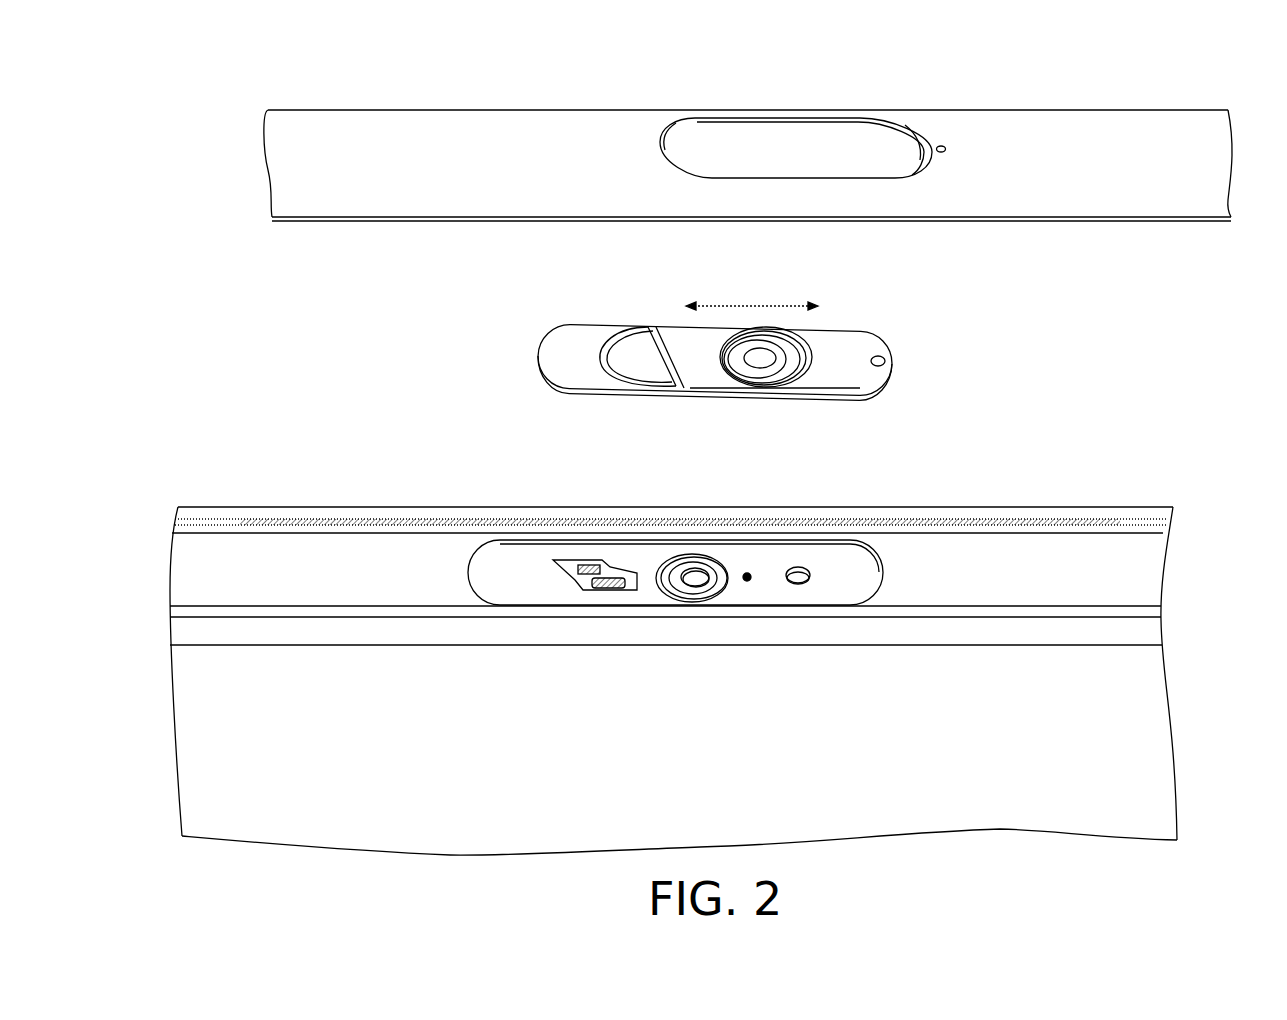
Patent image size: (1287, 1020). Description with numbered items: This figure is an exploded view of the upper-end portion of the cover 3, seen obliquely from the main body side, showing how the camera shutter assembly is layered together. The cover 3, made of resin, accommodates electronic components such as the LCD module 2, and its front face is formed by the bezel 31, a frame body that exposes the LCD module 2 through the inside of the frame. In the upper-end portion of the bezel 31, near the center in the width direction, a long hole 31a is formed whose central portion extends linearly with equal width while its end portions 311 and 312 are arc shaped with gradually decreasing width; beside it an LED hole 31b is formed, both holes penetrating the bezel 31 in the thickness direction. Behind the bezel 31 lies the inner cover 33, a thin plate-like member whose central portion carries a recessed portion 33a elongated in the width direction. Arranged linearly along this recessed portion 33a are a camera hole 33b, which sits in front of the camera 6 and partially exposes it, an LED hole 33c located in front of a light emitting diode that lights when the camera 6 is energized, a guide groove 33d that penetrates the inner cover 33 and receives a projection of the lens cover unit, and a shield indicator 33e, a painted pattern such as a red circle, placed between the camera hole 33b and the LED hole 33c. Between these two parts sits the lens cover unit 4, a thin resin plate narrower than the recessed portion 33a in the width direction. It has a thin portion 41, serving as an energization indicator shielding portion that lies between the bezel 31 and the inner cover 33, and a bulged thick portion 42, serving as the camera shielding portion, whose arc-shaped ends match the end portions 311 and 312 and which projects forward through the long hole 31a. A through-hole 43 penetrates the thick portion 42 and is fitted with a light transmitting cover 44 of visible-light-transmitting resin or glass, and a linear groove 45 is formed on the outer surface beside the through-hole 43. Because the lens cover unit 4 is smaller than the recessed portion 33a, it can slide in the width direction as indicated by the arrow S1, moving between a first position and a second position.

The LCD module 2 is at (1143, 750).
The cover 3 is at (230, 117).
The bezel 31 is at (455, 110).
The end portion 311 is at (663, 143).
The end portion 312 is at (906, 152).
The long hole 31a is at (775, 133).
The LED hole 31b is at (944, 147).
The lens cover unit 4 is at (534, 344).
The thin portion 41 is at (565, 387).
The thick portion 42 is at (706, 368).
The through-hole 43 is at (750, 380).
The light transmitting cover 44 is at (797, 390).
The groove 45 is at (672, 398).
The arrow S1 is at (738, 303).
The inner cover 33 is at (1130, 570).
The recessed portion 33a is at (481, 562).
The camera hole 33b is at (712, 600).
The LED hole 33c is at (805, 585).
The guide groove 33d is at (568, 592).
The shield indicator 33e is at (750, 582).
The camera 6 is at (688, 590).